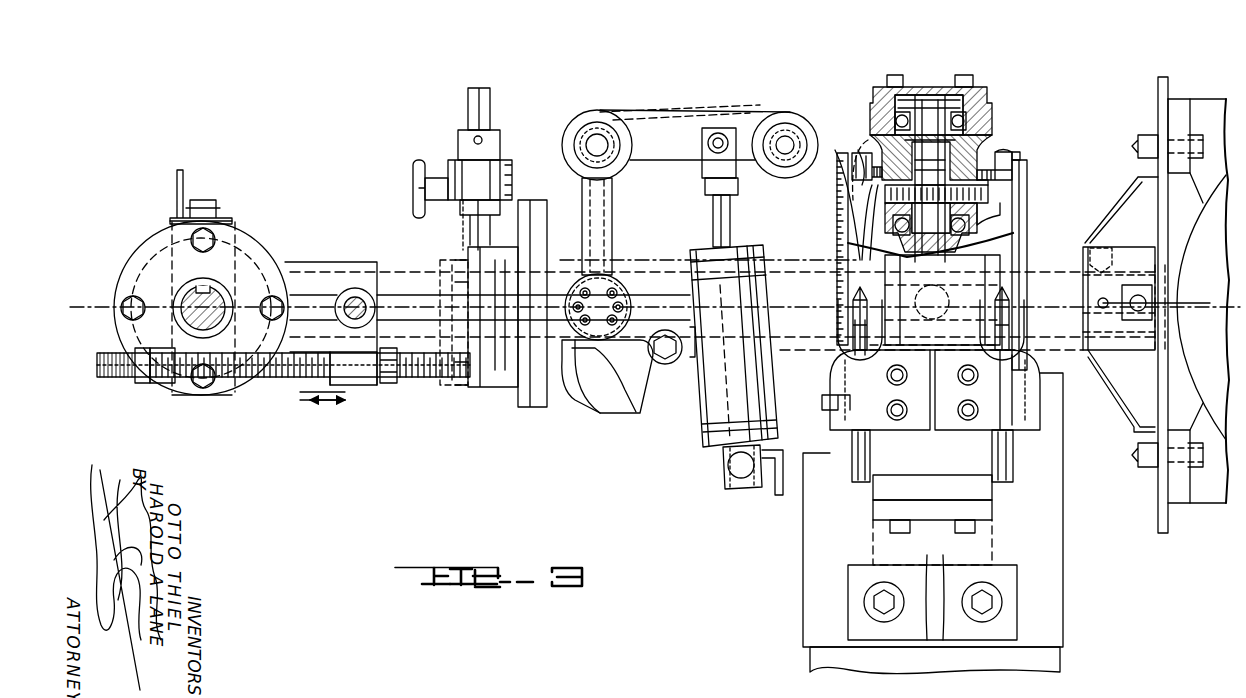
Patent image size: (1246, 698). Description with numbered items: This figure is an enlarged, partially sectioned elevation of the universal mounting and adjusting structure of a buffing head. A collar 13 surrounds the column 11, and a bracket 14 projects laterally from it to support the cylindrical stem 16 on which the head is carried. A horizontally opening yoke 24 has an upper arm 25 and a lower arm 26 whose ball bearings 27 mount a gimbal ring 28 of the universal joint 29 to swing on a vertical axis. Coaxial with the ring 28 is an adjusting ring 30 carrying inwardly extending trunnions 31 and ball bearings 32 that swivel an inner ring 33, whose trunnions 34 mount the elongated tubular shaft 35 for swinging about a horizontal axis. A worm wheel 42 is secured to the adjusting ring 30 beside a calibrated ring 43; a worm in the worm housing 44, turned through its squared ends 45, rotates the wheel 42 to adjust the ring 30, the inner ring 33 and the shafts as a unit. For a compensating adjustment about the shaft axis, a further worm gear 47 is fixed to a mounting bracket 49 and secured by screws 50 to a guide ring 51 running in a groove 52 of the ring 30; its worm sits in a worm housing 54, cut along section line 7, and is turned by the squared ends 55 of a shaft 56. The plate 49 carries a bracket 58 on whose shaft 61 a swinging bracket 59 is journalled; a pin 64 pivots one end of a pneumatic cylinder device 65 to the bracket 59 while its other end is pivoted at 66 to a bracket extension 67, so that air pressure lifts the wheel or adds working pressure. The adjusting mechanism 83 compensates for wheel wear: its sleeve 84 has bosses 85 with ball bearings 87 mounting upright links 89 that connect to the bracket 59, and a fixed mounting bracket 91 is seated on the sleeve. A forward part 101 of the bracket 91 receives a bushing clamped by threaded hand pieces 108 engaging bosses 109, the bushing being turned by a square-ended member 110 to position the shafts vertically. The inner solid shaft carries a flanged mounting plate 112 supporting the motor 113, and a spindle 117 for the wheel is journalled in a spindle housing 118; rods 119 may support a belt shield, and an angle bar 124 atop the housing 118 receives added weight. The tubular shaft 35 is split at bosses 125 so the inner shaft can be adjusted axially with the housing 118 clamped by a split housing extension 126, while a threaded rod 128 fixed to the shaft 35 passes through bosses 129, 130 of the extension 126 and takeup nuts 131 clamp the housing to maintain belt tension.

The section line / pin 7 is at (840, 292).
The column 11 is at (1050, 667).
The collar 13 is at (1060, 612).
The bracket 14 is at (920, 578).
The cylindrical stem 16 is at (945, 565).
The yoke 24 is at (872, 92).
The upper arm of yoke 25 is at (985, 120).
The lower arm of yoke 26 is at (985, 490).
The ball bearings 27 is at (968, 125).
The gimbal ring 28 is at (1020, 165).
The universal joint 29 is at (1032, 432).
The adjusting ring 30 is at (980, 200).
The trunnions 31 is at (972, 226).
The ball bearings 32 is at (742, 221).
The inner ring 33 is at (950, 252).
The trunnions 34 is at (942, 300).
The tubular shaft 35 is at (660, 268).
The worm wheel 42 is at (1010, 165).
The calibrated ring 43 is at (1028, 185).
The worm housing member 44 is at (1025, 395).
The worm ends 45 is at (1005, 455).
The worm gear 47 is at (870, 190).
The mounting bracket 49 is at (820, 185).
The screws 50 is at (875, 195).
The guide ring 51 is at (905, 178).
The groove 52 is at (862, 230).
The worm housing 54 is at (932, 404).
The squared ends 55 is at (875, 482).
The shaft 56 is at (860, 445).
The bracket 58 is at (842, 160).
The swinging bracket 59 is at (660, 108).
The shaft 61 is at (770, 115).
The pin 64 is at (708, 148).
The pneumatic plunger and cylinder device 65 is at (708, 245).
The pivot 66 is at (740, 480).
The bracket extension 67 is at (778, 460).
The adjusting mechanism 83 is at (533, 195).
The sleeve 84 is at (565, 362).
The ears or bosses 85 is at (585, 340).
The ball bearings 87 is at (598, 328).
The upright links 89 is at (600, 240).
The mounting bracket 91 is at (530, 400).
The forward extending part 101 is at (498, 182).
The threaded hand piece 108 is at (420, 196).
The bosses 109 is at (490, 170).
The square-ended member 110 is at (490, 125).
The flanged mounting plate 112 is at (1160, 497).
The motor 113 is at (1205, 90).
The spindle 117 is at (210, 300).
The spindle housing 118 is at (183, 240).
The rods 119 is at (358, 300).
The angle bar 124 is at (190, 213).
The bosses 125 is at (668, 364).
The split housing extension 126 is at (332, 268).
The threaded rod 128 is at (450, 372).
The boss 129 is at (362, 392).
The boss 130 is at (160, 385).
The takeup nuts 131 is at (140, 378).